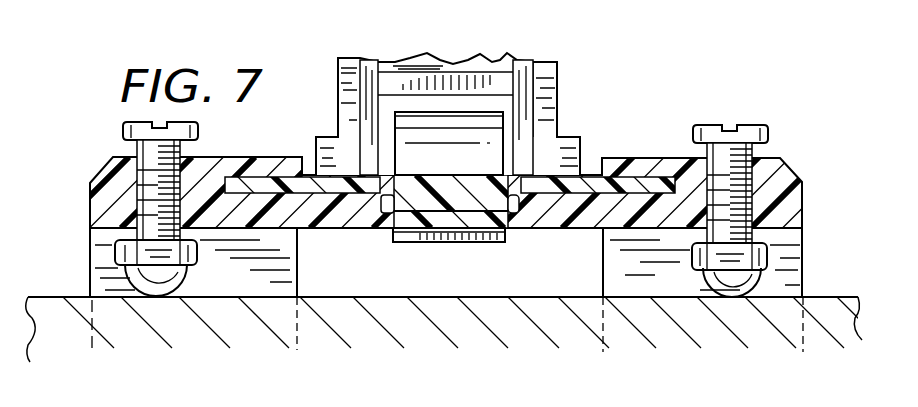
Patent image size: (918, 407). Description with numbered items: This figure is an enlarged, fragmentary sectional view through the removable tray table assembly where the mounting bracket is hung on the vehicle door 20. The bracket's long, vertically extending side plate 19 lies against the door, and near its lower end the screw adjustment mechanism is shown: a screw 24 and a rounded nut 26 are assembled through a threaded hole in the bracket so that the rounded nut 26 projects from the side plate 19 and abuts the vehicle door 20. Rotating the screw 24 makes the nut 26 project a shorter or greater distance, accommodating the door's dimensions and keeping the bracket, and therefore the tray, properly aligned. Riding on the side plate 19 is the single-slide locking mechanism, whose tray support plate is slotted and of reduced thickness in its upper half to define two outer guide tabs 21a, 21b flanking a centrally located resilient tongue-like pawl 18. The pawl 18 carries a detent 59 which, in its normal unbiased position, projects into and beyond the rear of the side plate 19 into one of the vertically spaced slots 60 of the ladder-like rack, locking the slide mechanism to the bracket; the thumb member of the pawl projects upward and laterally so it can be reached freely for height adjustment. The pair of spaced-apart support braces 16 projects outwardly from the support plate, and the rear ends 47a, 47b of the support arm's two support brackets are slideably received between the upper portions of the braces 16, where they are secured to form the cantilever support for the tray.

The support brace 16 is at (353, 60).
The pawl 18 is at (458, 168).
The side plate 19 is at (100, 178).
The vehicle door 20 is at (434, 368).
The outer guide tab 21a is at (653, 185).
The outer guide tab 21b is at (257, 186).
The screw 24 is at (200, 125).
The rounded nut 26 is at (187, 267).
The rear end of support bracket 47a is at (368, 58).
The rear end of support bracket 47b is at (525, 62).
The detent 59 is at (454, 246).
The slot 60 is at (382, 212).